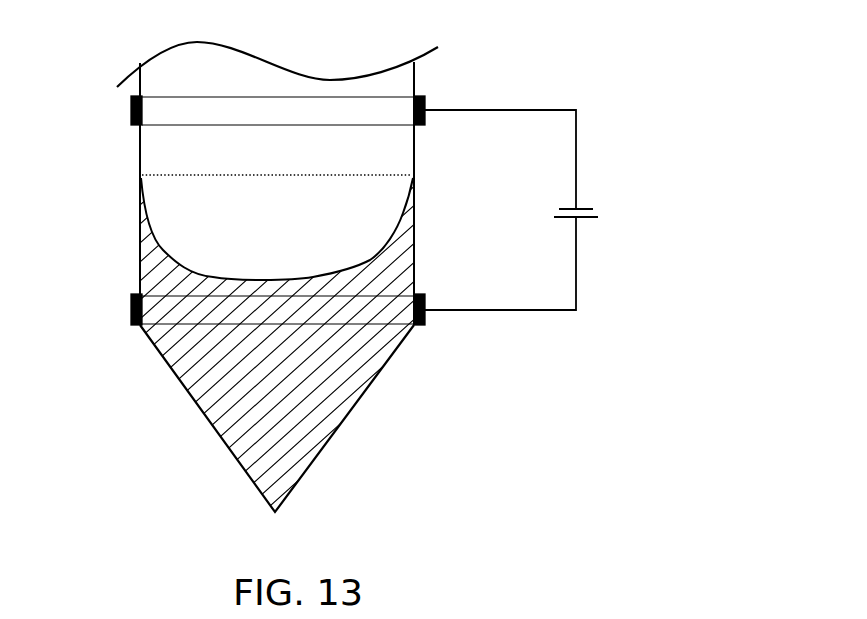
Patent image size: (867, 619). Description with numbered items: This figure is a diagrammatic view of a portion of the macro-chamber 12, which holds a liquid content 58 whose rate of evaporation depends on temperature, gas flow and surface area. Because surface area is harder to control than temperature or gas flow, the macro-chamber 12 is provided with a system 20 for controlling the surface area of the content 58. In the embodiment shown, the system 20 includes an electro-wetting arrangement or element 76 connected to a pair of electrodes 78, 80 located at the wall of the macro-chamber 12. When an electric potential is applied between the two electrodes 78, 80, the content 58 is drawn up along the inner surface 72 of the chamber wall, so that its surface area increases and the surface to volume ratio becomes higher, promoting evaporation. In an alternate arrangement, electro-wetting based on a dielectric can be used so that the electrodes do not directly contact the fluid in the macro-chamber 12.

The macro-chamber 12 is at (415, 148).
The system 20 is at (664, 83).
The content 58 is at (363, 385).
The inner surface 72 is at (140, 260).
The electro-wetting arrangement/element 76 is at (602, 119).
The electrode 78 is at (131, 111).
The electrode 80 is at (131, 308).